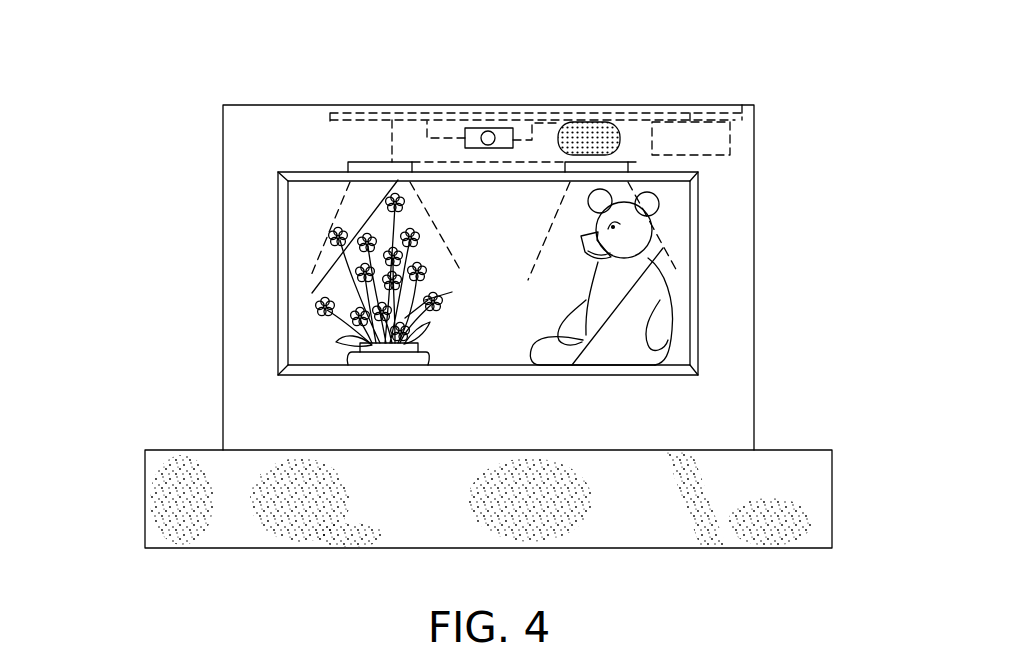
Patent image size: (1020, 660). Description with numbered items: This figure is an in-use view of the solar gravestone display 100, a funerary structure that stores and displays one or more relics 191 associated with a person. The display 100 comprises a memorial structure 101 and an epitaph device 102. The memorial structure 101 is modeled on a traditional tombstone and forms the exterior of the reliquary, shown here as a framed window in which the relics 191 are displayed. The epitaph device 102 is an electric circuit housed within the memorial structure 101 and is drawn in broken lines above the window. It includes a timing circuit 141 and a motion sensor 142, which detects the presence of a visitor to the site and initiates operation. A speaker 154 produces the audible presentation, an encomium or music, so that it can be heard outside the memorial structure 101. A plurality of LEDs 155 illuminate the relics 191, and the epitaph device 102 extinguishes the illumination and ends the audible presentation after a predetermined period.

The solar gravestone display 100 is at (128, 108).
The memorial structure 101 is at (168, 373).
The epitaph device 102 is at (633, 135).
The timing circuit 141 is at (718, 141).
The motion sensor 142 is at (488, 130).
The speaker 154 is at (590, 135).
The plurality of LEDs 155 is at (348, 162).
The relics 191 is at (400, 345).